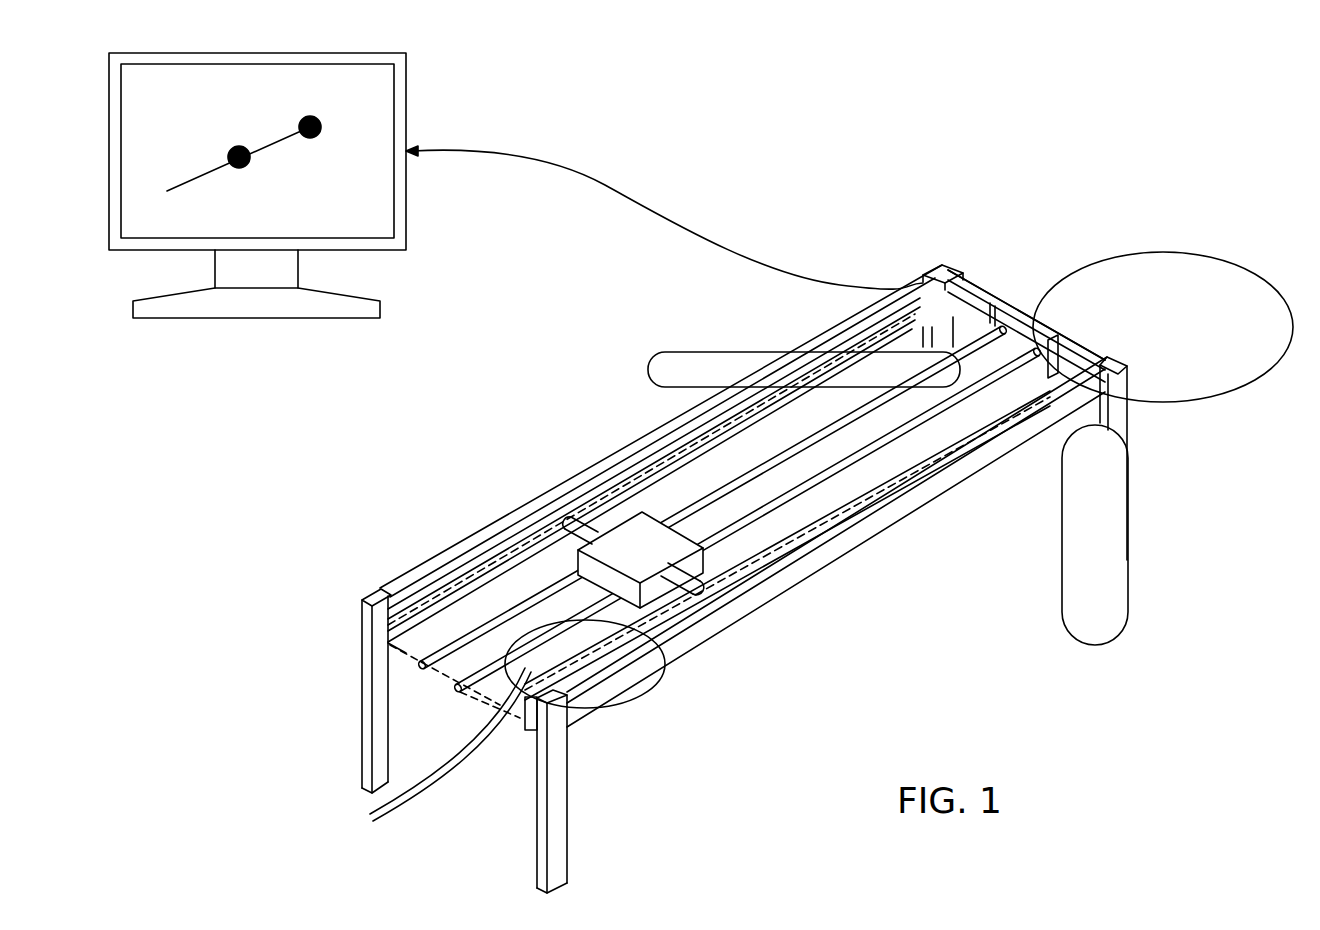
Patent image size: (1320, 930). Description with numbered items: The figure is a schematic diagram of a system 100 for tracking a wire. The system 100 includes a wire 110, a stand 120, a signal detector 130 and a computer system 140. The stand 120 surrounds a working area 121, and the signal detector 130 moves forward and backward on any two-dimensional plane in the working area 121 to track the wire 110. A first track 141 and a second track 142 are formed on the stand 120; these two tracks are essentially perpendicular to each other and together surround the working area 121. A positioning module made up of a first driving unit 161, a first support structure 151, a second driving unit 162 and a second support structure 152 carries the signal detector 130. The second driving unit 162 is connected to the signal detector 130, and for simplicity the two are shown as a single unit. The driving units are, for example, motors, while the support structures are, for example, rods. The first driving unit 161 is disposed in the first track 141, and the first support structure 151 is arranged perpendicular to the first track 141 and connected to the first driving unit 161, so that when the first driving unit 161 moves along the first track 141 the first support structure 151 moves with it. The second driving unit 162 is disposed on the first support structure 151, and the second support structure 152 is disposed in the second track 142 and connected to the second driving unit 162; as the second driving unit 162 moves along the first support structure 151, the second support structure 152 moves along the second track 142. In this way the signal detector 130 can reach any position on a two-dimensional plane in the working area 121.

The system 100 is at (1172, 90).
The wire 110 is at (408, 800).
The stand 120 is at (372, 590).
The working area 121 is at (388, 650).
The signal detector 130 is at (641, 663).
The second driving unit 162 is at (655, 590).
The computer system 140 is at (406, 95).
The first track 141 is at (968, 290).
The second track 142 is at (740, 390).
The first support structure 151 is at (857, 413).
The second support structure 152 is at (585, 522).
The first driving unit 161 is at (1015, 332).